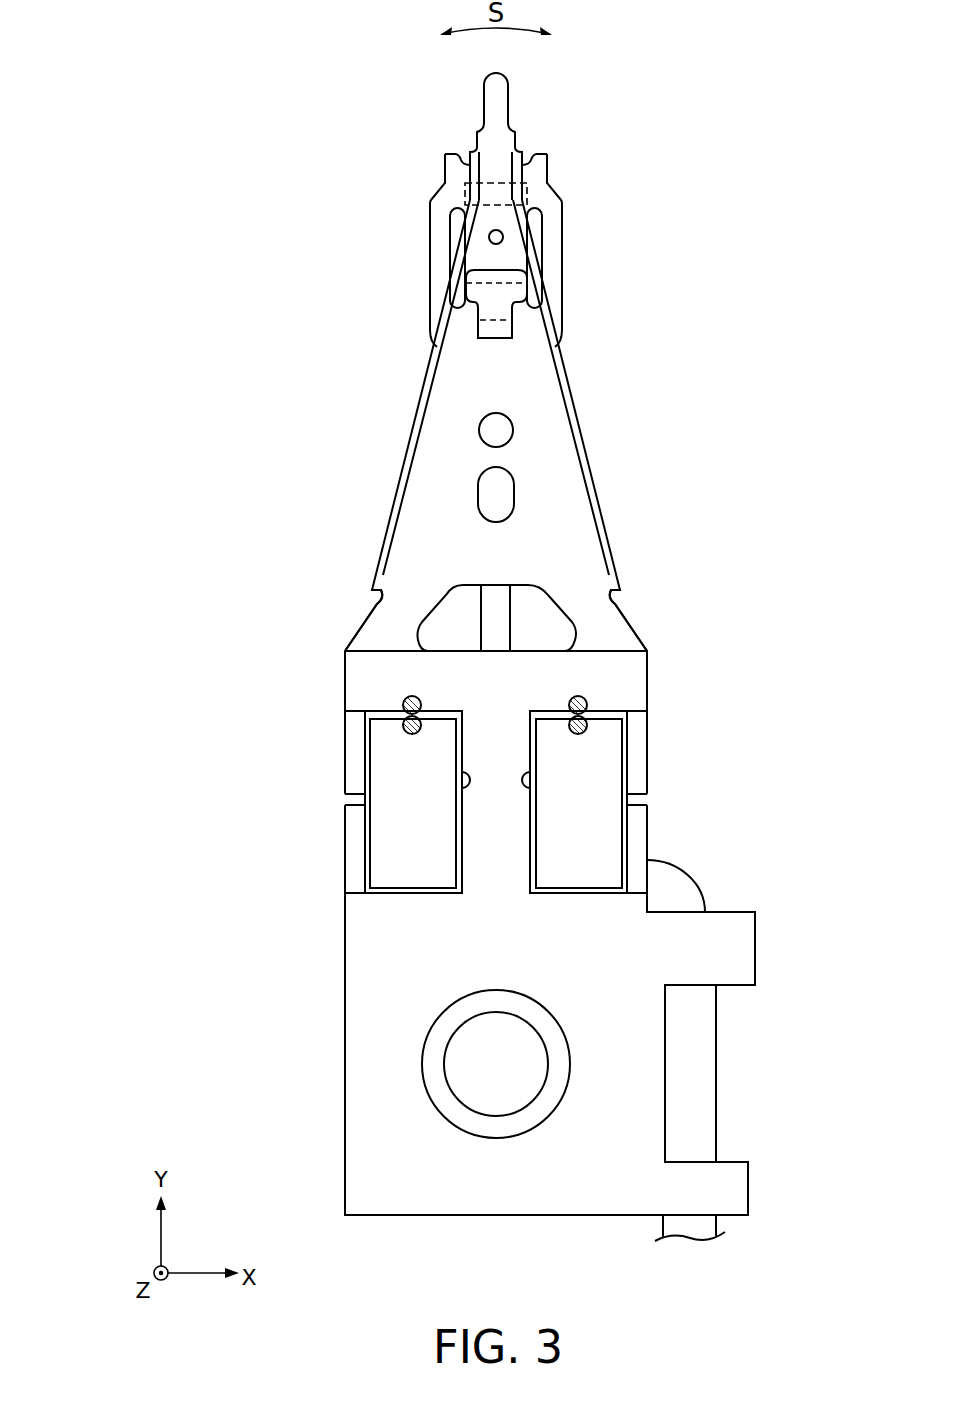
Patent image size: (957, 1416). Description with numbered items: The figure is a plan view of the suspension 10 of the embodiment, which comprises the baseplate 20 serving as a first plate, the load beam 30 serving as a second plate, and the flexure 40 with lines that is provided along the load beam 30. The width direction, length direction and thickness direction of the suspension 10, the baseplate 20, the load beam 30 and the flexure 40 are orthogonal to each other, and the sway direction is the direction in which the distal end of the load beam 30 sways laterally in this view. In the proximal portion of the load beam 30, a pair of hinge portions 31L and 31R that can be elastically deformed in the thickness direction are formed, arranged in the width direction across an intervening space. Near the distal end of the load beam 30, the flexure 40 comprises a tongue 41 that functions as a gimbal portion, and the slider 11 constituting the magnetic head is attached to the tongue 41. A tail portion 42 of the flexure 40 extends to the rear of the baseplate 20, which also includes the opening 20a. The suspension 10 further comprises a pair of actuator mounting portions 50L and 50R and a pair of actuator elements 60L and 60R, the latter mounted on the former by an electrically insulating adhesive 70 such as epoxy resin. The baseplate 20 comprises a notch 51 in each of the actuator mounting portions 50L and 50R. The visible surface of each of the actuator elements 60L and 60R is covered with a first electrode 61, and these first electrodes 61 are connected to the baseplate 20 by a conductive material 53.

The suspension 10 is at (318, 374).
The slider 11 is at (463, 197).
The baseplate 20 is at (360, 1008).
The through hole 20a is at (423, 1076).
The load beam 30 is at (398, 490).
The hinge portion 31L is at (366, 632).
The hinge portion 31R is at (626, 632).
The flexure 40 is at (416, 248).
The tongue 41 is at (490, 307).
The tail portion 42 is at (717, 1068).
The actuator mounting portion 50L is at (326, 799).
The actuator mounting portion 50R is at (666, 799).
The notch 51 is at (525, 779).
The conductive material 53 is at (412, 696).
The actuator element 60L is at (388, 764).
The actuator element 60R is at (606, 763).
The first electrode 61 is at (386, 831).
The electrically insulating adhesive 70 is at (415, 895).